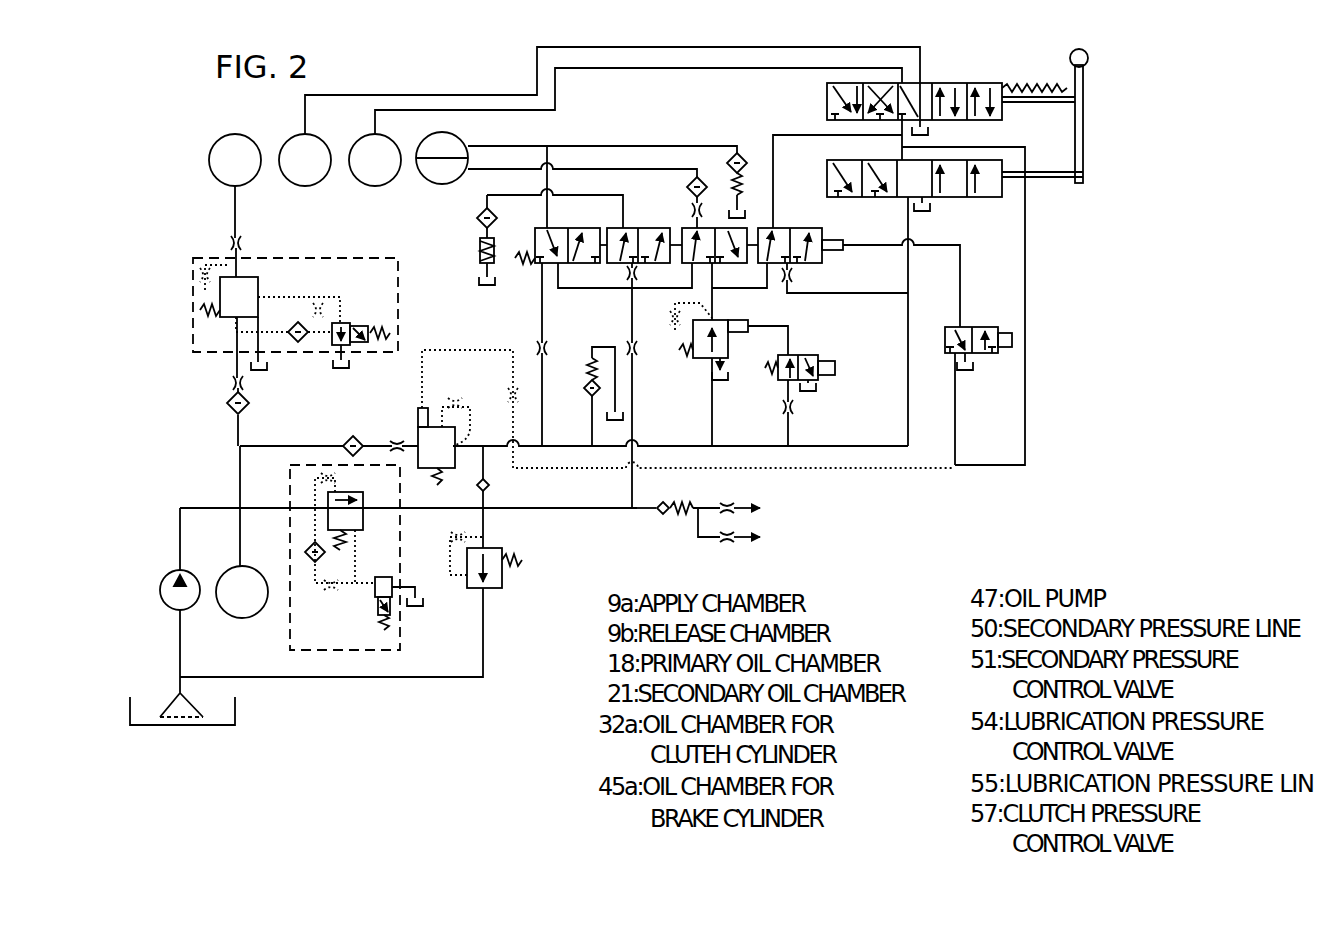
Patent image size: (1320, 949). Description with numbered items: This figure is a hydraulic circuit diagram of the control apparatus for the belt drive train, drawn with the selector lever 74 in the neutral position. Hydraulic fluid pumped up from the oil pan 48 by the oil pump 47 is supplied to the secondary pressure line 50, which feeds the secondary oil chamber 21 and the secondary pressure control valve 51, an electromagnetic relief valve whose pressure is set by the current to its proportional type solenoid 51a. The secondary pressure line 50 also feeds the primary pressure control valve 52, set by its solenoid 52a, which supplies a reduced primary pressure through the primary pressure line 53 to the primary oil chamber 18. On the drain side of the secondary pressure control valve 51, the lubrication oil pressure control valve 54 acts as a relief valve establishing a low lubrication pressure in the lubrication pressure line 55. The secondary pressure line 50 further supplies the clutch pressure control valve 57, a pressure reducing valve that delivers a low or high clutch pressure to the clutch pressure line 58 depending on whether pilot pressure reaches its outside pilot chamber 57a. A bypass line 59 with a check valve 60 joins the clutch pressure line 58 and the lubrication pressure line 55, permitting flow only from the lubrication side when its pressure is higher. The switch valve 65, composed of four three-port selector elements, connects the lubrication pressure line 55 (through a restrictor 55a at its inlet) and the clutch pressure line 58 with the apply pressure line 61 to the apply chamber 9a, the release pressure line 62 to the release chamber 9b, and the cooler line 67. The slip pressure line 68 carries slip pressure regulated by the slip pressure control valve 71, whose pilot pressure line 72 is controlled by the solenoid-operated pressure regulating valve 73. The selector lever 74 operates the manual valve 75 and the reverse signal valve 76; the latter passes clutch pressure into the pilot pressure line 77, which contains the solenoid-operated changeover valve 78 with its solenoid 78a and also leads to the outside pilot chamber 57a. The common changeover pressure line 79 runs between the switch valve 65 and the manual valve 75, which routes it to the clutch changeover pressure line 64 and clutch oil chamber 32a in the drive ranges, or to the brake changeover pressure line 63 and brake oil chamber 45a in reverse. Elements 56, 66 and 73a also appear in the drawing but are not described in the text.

The apply chamber 9a is at (447, 143).
The release chamber 9b is at (440, 175).
The primary oil chamber 18 is at (235, 160).
The secondary oil chamber 21 is at (242, 592).
The clutch oil chamber 32a is at (375, 160).
The brake oil chamber 45a is at (305, 160).
The oil pump 47 is at (175, 580).
The oil pan 48 is at (235, 708).
The secondary pressure line 50 is at (207, 508).
The secondary pressure control valve 51 is at (400, 645).
The proportional type solenoid 51a is at (375, 618).
The primary pressure control valve 52 is at (312, 248).
The proportional type solenoid 52a is at (357, 330).
The primary pressure line 53 is at (235, 208).
The lubrication oil pressure control valve 54 is at (496, 590).
The lubrication pressure line 55 is at (595, 512).
The restrictor 55a is at (622, 290).
The return line 56 is at (484, 668).
The clutch pressure control valve 57 is at (418, 437).
The outside pilot chamber 57a is at (424, 408).
The clutch pressure line 58 is at (683, 446).
The bypass line 59 is at (486, 495).
The check valve 60 is at (489, 485).
The apply pressure line 61 is at (537, 146).
The release pressure line 62 is at (627, 168).
The brake changeover pressure line 63 is at (680, 48).
The clutch changeover pressure line 64 is at (745, 68).
The switch valve 65 is at (656, 205).
The filter 66 is at (480, 250).
The cooler line 67 is at (590, 190).
The slip pressure line 68 is at (728, 292).
The slip pressure control valve 71 is at (693, 358).
The pilot pressure line 72 is at (790, 338).
The solenoid-operated pressure regulating valve 73 is at (790, 404).
The solenoid 73a is at (835, 367).
The selector lever 74 is at (1075, 123).
The manual valve 75 is at (827, 101).
The reverse signal valve 76 is at (827, 183).
The pilot pressure line 77 is at (1025, 234).
The solenoid-operated changeover valve 78 is at (947, 333).
The solenoid 78a is at (1000, 333).
The common changeover pressure line 79 is at (773, 150).